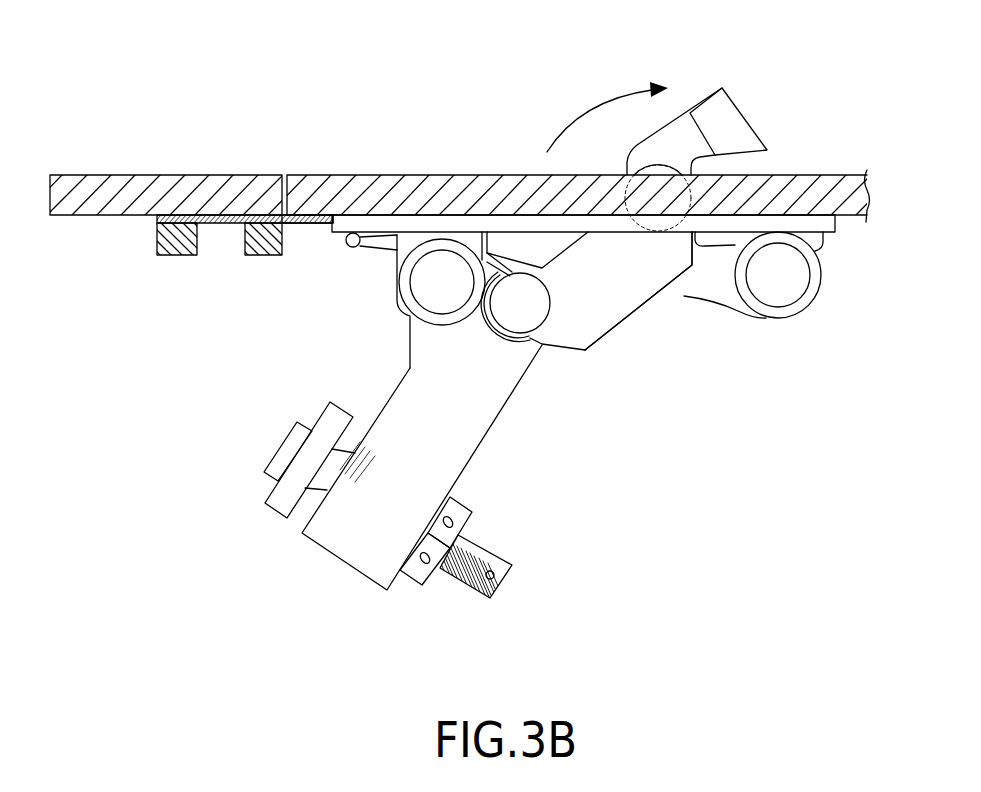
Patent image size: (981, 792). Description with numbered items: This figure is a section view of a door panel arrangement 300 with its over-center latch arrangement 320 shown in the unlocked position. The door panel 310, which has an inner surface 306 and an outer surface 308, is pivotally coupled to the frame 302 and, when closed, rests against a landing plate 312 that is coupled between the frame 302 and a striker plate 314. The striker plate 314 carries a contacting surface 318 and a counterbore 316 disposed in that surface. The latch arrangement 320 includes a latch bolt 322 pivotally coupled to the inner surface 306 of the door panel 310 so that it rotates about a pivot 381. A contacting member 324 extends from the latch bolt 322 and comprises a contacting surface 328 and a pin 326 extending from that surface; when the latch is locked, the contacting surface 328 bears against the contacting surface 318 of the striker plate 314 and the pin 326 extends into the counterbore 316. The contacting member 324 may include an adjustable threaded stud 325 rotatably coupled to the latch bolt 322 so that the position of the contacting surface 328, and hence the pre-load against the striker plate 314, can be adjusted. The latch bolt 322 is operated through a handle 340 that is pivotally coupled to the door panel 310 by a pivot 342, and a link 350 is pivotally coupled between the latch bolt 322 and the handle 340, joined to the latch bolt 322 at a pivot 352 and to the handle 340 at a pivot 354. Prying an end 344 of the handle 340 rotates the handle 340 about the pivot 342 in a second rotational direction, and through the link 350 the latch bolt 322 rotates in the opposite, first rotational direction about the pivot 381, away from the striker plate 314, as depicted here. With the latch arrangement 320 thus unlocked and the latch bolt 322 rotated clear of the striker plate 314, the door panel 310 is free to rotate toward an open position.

The door panel arrangement 300 is at (518, 76).
The frame 302 is at (177, 175).
The inner surface 306 is at (588, 232).
The outer surface 308 is at (450, 174).
The door panel 310 is at (523, 174).
The landing plate 312 is at (316, 224).
The striker plate 314 is at (157, 242).
The counterbore 316 is at (241, 222).
The contacting surface 318 is at (262, 256).
The latch arrangement 320 is at (686, 464).
The latch bolt 322 is at (495, 418).
The contacting member 324 is at (269, 504).
The adjustable threaded stud 325 is at (467, 570).
The pin 326 is at (215, 322).
The contacting surface 328 is at (318, 408).
The handle 340 is at (673, 140).
The pivot 342 is at (778, 286).
The end 344 is at (740, 126).
The link 350 is at (627, 302).
The pivot 352 is at (530, 313).
The pivot 354 is at (658, 228).
The pivot 381 is at (441, 286).